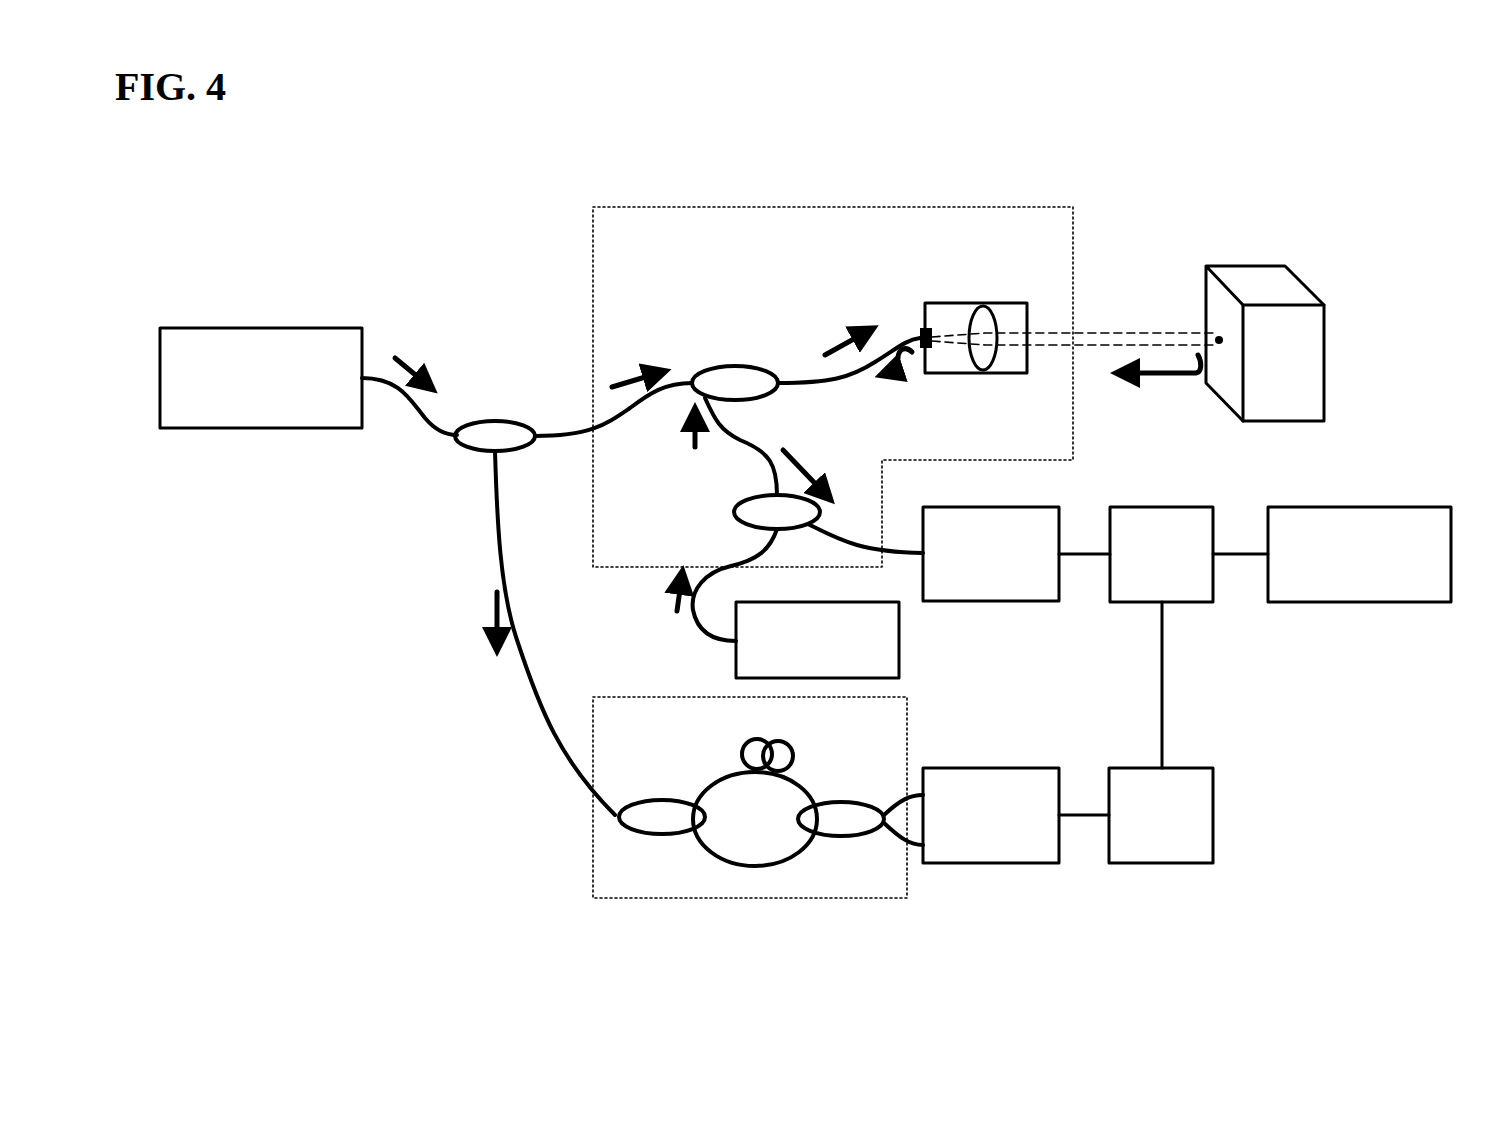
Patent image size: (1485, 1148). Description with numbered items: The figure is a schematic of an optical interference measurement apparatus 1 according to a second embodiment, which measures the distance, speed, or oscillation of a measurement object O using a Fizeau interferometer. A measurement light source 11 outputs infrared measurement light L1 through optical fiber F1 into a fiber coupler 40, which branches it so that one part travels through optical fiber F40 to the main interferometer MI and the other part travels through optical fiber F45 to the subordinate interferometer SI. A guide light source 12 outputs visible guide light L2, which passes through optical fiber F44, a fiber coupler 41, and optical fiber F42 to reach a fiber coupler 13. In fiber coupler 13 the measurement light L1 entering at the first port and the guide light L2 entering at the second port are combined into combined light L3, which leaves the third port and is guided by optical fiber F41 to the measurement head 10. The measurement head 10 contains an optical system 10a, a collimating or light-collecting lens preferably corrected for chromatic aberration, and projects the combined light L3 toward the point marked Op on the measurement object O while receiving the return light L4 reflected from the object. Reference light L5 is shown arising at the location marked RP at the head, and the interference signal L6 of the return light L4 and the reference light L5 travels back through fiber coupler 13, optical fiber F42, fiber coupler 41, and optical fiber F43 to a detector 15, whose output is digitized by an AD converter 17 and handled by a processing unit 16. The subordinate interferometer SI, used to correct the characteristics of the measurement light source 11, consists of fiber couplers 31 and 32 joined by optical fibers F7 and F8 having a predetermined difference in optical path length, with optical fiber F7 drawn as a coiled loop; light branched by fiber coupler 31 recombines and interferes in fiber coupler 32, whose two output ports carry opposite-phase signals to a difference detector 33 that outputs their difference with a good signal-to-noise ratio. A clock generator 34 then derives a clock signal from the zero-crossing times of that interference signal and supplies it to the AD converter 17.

The optical interference measurement apparatus 1 is at (166, 211).
The measurement light source 11 is at (300, 328).
The guide light source 12 is at (899, 648).
The fiber coupler 13 is at (760, 378).
The detector 15 is at (1012, 603).
The processing unit 16 is at (1386, 507).
The AD converter 17 is at (1194, 603).
The measurement head 10 is at (989, 297).
The optical system 10a is at (980, 308).
The fiber coupler 31 is at (658, 801).
The fiber coupler 32 is at (845, 803).
The difference detector 33 is at (1012, 865).
The clock generator 34 is at (1165, 865).
The fiber coupler 40 is at (505, 421).
The fiber coupler 41 is at (734, 510).
The main interferometer MI is at (593, 252).
The subordinate interferometer SI is at (593, 858).
The reference point RP is at (920, 330).
The measurement object O is at (1262, 275).
The measurement point on object Op is at (1212, 336).
The optical fiber F1 is at (409, 408).
The optical fiber F40 is at (613, 433).
The optical fiber F41 is at (849, 381).
The optical fiber F42 is at (741, 446).
The optical fiber F43 is at (865, 533).
The optical fiber F44 is at (716, 595).
The optical fiber F45 is at (532, 633).
The optical fiber F7 is at (757, 737).
The optical fiber F8 is at (750, 833).
The measurement light L1 is at (528, 489).
The guide light L2 is at (660, 511).
The combined light L3 is at (847, 323).
The return light L4 is at (1153, 386).
The reference light L5 is at (896, 383).
The interference signal L6 is at (814, 471).